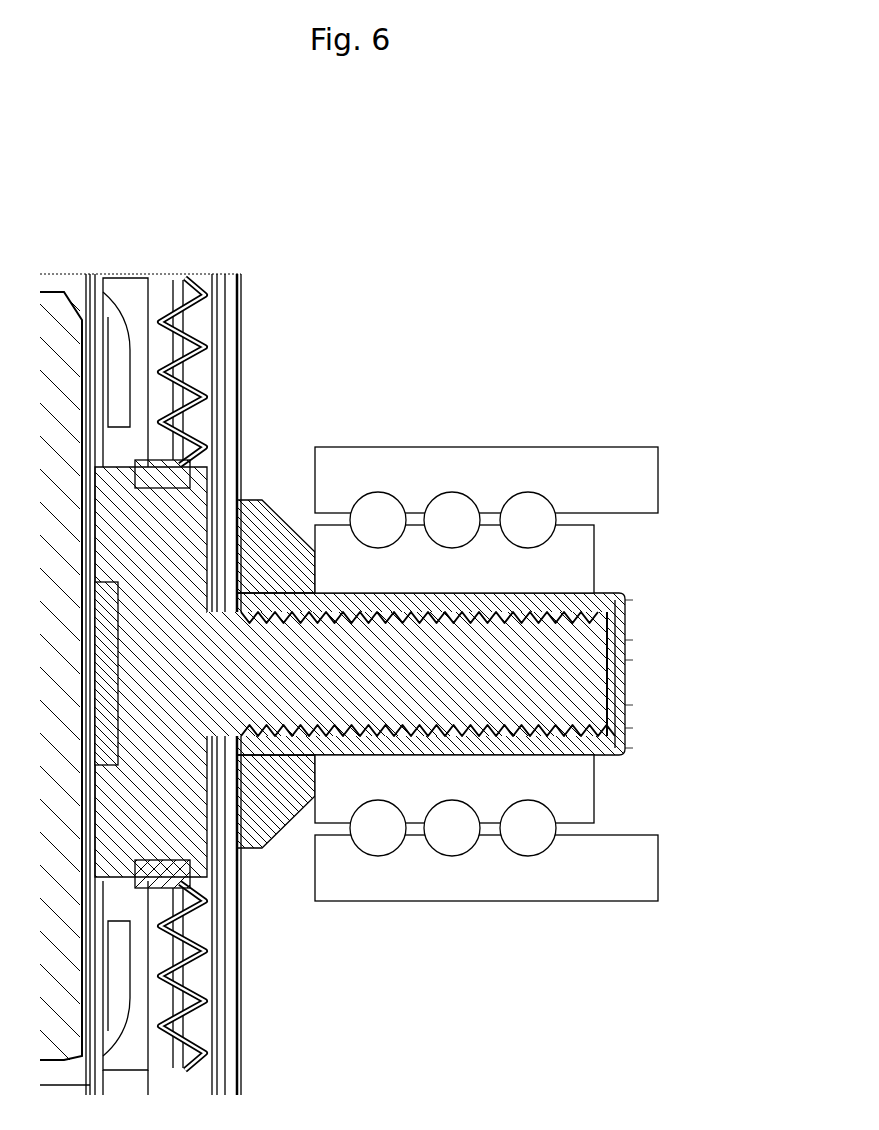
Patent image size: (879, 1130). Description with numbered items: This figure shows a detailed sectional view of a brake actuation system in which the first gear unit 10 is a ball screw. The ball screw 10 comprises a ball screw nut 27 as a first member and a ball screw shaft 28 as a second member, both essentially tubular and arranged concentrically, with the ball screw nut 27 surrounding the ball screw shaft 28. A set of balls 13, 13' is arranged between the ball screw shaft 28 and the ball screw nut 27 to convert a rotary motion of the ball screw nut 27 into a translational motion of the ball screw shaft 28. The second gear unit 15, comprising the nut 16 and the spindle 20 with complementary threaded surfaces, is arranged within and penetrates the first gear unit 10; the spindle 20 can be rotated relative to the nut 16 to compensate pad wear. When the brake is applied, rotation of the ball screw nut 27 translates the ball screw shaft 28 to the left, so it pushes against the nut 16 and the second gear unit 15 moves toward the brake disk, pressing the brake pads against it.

The first gear unit 10 is at (505, 577).
The ball 13 is at (370, 613).
The ball 13' is at (452, 613).
The second gear unit 15 is at (505, 674).
The nut 16 is at (628, 620).
The spindle 20 is at (742, 595).
The ball screw nut 27 is at (598, 447).
The ball screw shaft 28 is at (585, 553).